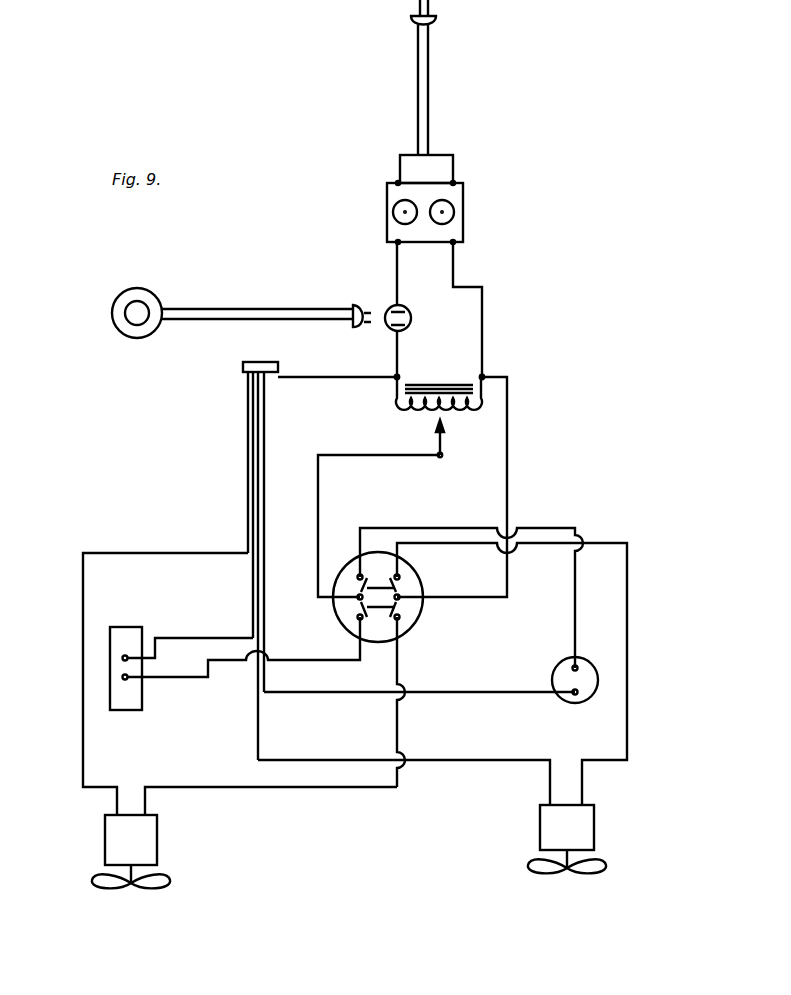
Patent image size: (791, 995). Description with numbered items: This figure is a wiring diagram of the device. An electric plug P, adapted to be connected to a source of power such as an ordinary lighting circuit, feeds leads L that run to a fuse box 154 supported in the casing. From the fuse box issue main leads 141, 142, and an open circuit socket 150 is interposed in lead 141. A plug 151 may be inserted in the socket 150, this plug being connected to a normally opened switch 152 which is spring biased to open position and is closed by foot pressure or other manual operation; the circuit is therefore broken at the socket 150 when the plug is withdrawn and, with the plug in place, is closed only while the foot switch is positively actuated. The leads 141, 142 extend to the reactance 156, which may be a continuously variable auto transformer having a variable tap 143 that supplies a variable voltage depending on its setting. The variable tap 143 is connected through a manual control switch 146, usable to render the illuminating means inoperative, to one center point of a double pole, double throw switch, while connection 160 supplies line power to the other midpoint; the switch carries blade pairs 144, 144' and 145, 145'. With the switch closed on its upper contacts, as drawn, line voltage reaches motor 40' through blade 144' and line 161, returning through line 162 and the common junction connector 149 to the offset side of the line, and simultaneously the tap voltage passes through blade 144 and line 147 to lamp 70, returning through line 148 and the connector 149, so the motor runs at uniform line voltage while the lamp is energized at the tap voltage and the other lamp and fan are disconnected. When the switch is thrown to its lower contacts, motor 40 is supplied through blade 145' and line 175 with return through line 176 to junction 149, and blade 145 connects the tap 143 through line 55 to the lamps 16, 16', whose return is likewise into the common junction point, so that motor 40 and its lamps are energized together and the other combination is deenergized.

The electric plug P is at (433, 20).
The leads L is at (428, 78).
The fuse box 154 is at (453, 203).
The main lead 141 is at (397, 256).
The main lead 142 is at (453, 257).
The open circuit socket 150 is at (391, 332).
The plug 151 is at (357, 310).
The normally opened switch 152 is at (115, 303).
The reactance 156 is at (445, 382).
The common junction connector 149 is at (242, 365).
The connection 160 is at (508, 410).
The variable tap 143 is at (400, 458).
The line 147 is at (408, 527).
The line 161 is at (605, 543).
The manual control switch 146 is at (422, 588).
The switch blade 144 is at (320, 563).
The switch blade 144' is at (434, 567).
The switch blade 145 is at (323, 623).
The switch blade 145' is at (436, 624).
The lamp 16 is at (133, 645).
The lamp 16' is at (126, 668).
The line 55 is at (184, 638).
The line 175 is at (399, 678).
The line 148 is at (460, 694).
The line 162 is at (512, 765).
The line 176 is at (83, 745).
The lamp 70 is at (587, 670).
The motor 40 is at (150, 851).
The motor 40' is at (595, 839).